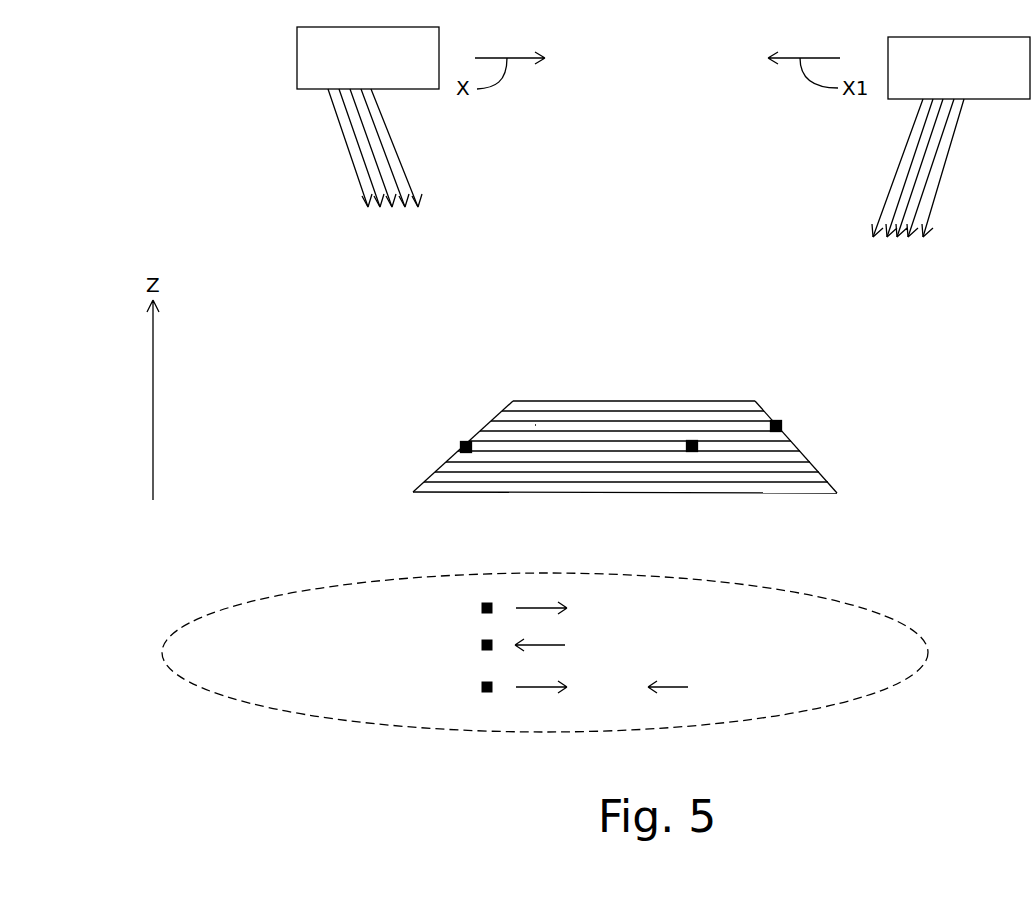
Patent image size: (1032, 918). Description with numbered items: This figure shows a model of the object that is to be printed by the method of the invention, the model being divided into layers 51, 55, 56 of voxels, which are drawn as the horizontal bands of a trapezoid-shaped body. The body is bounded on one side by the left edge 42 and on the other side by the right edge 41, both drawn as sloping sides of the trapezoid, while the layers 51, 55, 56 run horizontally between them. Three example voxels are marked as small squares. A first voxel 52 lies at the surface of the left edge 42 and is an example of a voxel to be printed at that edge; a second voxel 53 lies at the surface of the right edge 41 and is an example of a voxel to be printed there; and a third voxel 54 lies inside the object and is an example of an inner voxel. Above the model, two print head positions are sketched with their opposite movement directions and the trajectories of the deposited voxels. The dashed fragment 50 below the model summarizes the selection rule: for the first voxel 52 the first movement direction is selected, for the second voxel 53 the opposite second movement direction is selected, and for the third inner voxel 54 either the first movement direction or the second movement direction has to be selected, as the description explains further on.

The right steep edge 41 is at (827, 477).
The left steep edge 42 is at (428, 478).
The fragment 50 is at (905, 627).
The layer 51 is at (637, 487).
The first voxel 52 is at (463, 442).
The second voxel 53 is at (780, 426).
The third voxel 54 is at (692, 441).
The layer 55 is at (535, 425).
The layer 56 is at (585, 405).